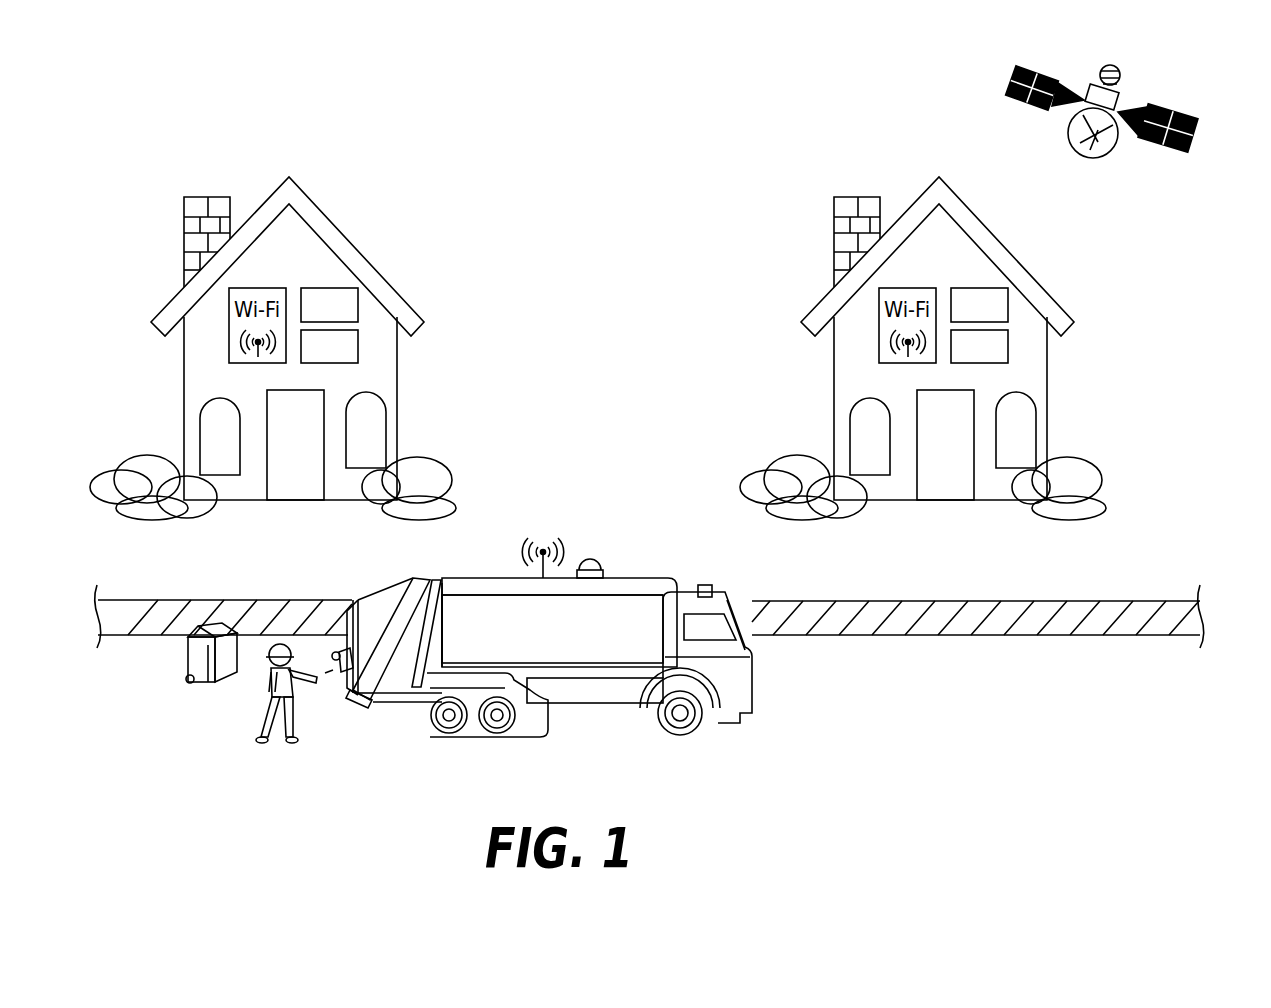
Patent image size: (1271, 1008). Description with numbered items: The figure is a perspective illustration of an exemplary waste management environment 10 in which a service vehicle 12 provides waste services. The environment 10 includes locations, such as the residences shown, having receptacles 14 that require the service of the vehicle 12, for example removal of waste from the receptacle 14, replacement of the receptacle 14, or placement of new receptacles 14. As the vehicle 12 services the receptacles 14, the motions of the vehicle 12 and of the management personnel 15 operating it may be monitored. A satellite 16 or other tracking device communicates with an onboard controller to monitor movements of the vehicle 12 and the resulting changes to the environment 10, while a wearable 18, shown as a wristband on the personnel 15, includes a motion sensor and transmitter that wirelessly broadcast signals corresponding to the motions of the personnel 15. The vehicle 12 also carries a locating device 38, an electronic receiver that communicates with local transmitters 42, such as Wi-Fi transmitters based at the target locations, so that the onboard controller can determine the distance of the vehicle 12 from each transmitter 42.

The waste management environment 10 is at (574, 396).
The service vehicle 12 is at (547, 638).
The receptacle 14 is at (229, 670).
The management personnel 15 is at (300, 722).
The satellite 16 is at (1086, 156).
The wearable 18 is at (305, 676).
The locating device 38 is at (602, 508).
The local transmitter 42 is at (258, 357).